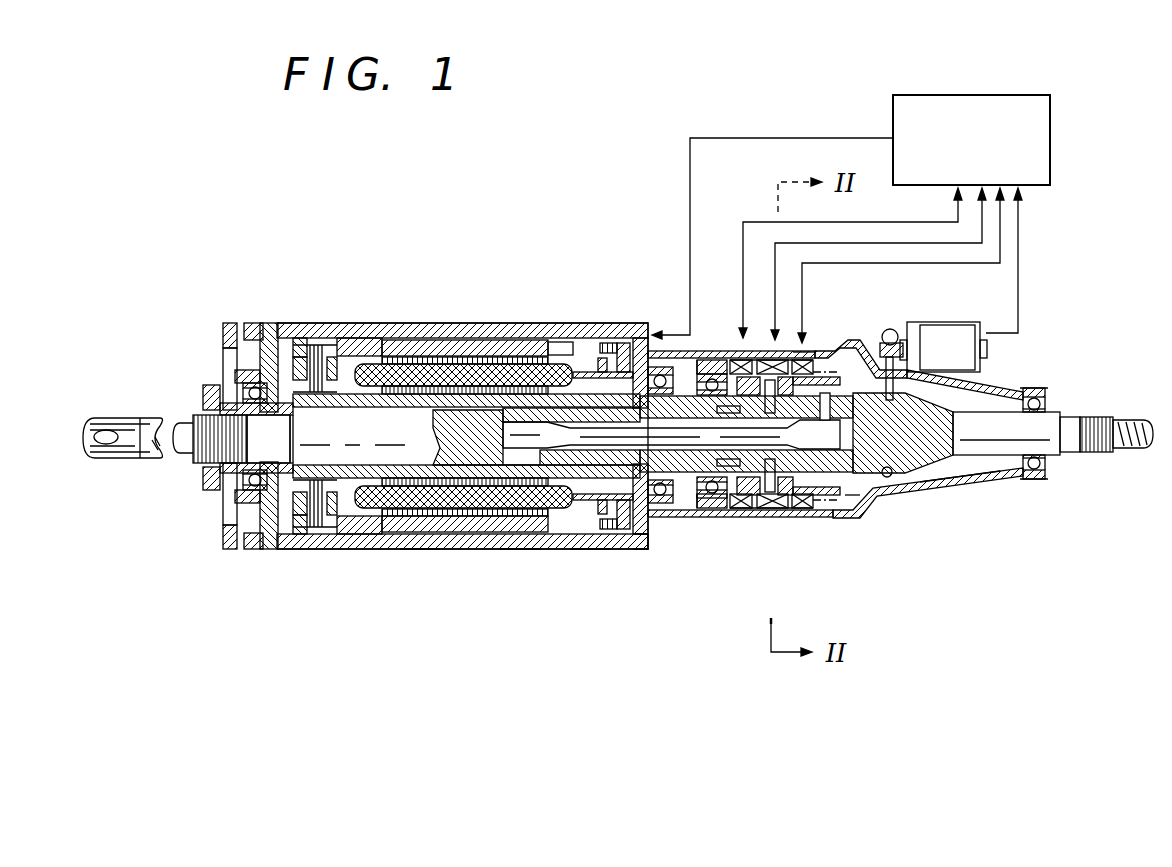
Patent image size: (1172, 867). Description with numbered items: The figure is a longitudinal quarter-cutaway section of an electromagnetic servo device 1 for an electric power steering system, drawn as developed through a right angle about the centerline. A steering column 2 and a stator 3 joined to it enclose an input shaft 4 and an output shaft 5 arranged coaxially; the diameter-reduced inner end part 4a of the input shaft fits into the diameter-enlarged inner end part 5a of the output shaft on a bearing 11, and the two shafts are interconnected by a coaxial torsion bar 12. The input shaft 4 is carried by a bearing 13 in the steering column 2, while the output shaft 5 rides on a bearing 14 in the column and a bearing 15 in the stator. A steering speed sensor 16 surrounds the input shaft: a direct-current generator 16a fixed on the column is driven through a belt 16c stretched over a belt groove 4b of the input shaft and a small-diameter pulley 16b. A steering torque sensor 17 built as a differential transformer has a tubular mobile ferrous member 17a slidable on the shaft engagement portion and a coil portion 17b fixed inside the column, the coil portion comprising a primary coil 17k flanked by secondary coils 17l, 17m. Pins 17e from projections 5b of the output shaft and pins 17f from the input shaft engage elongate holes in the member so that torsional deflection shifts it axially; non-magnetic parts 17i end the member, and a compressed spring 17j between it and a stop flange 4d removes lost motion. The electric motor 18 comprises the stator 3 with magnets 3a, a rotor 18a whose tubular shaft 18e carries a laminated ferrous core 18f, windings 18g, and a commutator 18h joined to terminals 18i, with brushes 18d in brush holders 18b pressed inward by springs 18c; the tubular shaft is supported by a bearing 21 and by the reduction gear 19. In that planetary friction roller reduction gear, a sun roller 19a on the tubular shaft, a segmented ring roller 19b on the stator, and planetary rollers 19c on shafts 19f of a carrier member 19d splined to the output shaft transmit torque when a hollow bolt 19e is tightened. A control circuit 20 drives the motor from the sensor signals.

The electromagnetic servo device 1 is at (640, 150).
The steering column 2 is at (1012, 391).
The stator 3 is at (425, 340).
The magnets 3a is at (468, 345).
The input shaft 4 is at (980, 480).
The diameter-reduced inner end part 4a is at (662, 518).
The belt groove 4b is at (897, 388).
The stop flange 4d is at (890, 494).
The output shaft 5 is at (185, 455).
The diameter-enlarged inner end part 5a is at (690, 372).
The projections 5b is at (716, 503).
The bearing 11 is at (712, 420).
The torsion bar 12 is at (440, 432).
The bearing 13 is at (1048, 463).
The bearing 14 is at (668, 512).
The bearing 15 is at (237, 481).
The steering speed sensor 16 is at (897, 331).
The direct-current generator 16a is at (930, 360).
The small-diameter pulley 16b is at (873, 332).
The belt 16c is at (935, 489).
The steering torque sensor 17 is at (737, 342).
The mobile ferrous member 17a is at (815, 506).
The coil portion 17b is at (732, 565).
The pins 17e is at (836, 478).
The pins 17f is at (828, 406).
The non-magnetic parts 17i is at (806, 346).
The compressed spring 17j is at (855, 497).
The primary coil 17k is at (775, 509).
The secondary coil 17l is at (805, 509).
The secondary coil 17m is at (741, 509).
The electric motor 18 is at (574, 229).
The rotor 18a is at (553, 340).
The brush holders 18b is at (585, 345).
The springs 18c is at (615, 340).
The brushes 18d is at (637, 345).
The tubular shaft 18e is at (466, 436).
The laminated ferrous core 18f is at (420, 549).
The windings 18g is at (520, 549).
The commutator 18h is at (590, 549).
The terminals 18i is at (575, 345).
The reduction gear 19 is at (307, 294).
The sun roller 19a is at (370, 345).
The ring roller 19b is at (335, 340).
The planetary rollers 19c is at (345, 534).
The carrier member 19d is at (285, 445).
The hollow bolt 19e is at (226, 322).
The shafts 19f is at (280, 333).
The control circuit 20 is at (1018, 95).
The bearing 21 is at (640, 549).